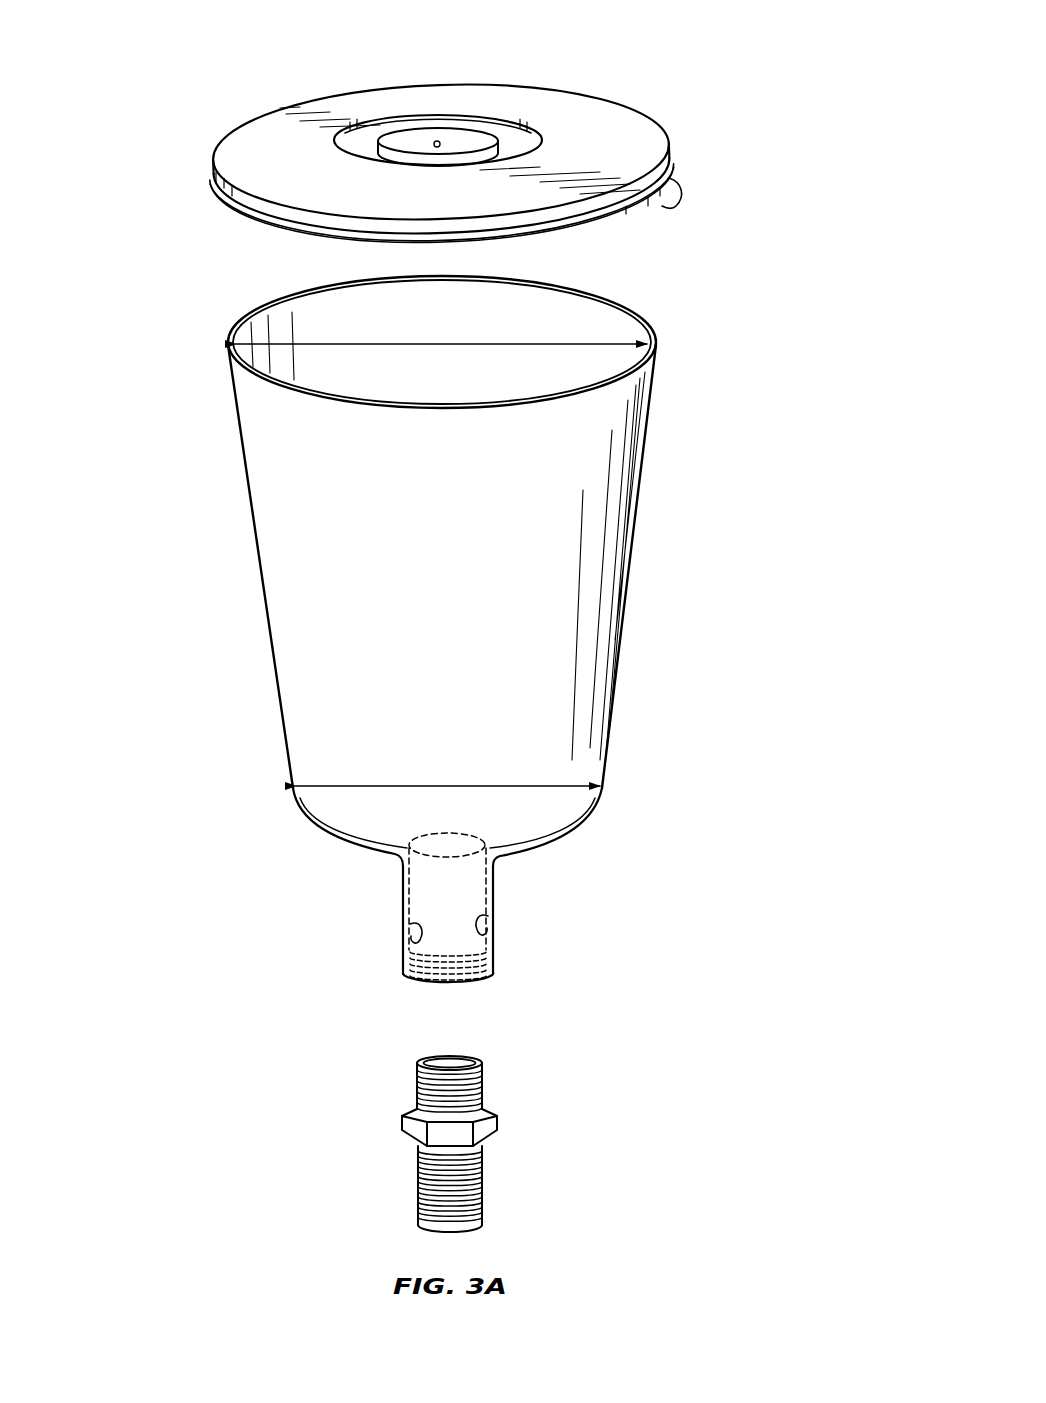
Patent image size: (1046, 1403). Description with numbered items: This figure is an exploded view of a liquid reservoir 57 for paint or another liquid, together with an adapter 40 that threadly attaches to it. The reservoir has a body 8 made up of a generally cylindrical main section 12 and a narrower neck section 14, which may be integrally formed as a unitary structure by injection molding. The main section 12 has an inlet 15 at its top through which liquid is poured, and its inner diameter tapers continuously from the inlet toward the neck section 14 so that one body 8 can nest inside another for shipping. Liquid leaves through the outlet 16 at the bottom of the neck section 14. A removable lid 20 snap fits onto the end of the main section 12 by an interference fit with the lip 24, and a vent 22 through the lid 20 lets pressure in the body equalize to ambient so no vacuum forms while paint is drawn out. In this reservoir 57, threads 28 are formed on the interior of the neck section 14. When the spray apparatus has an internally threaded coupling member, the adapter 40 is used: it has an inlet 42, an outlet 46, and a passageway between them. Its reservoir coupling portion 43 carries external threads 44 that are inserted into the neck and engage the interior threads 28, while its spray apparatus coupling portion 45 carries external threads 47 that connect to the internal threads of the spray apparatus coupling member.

The reservoir 57 is at (692, 36).
The removable lid 20 is at (247, 143).
The vent 22 is at (437, 141).
The body 8 is at (665, 636).
The lip 24 is at (228, 343).
The inlet 15 is at (586, 325).
The main section 12 is at (250, 512).
The neck section 14 is at (372, 880).
The threads 28 is at (412, 926).
The outlet 16 is at (463, 985).
The adapter 40 is at (540, 1098).
The inlet 42 is at (446, 1061).
The reservoir coupling portion 43 is at (396, 1062).
The external threads 44 is at (485, 1083).
The spray apparatus coupling portion 45 is at (392, 1138).
The external threads 47 is at (485, 1182).
The outlet 46 is at (472, 1228).